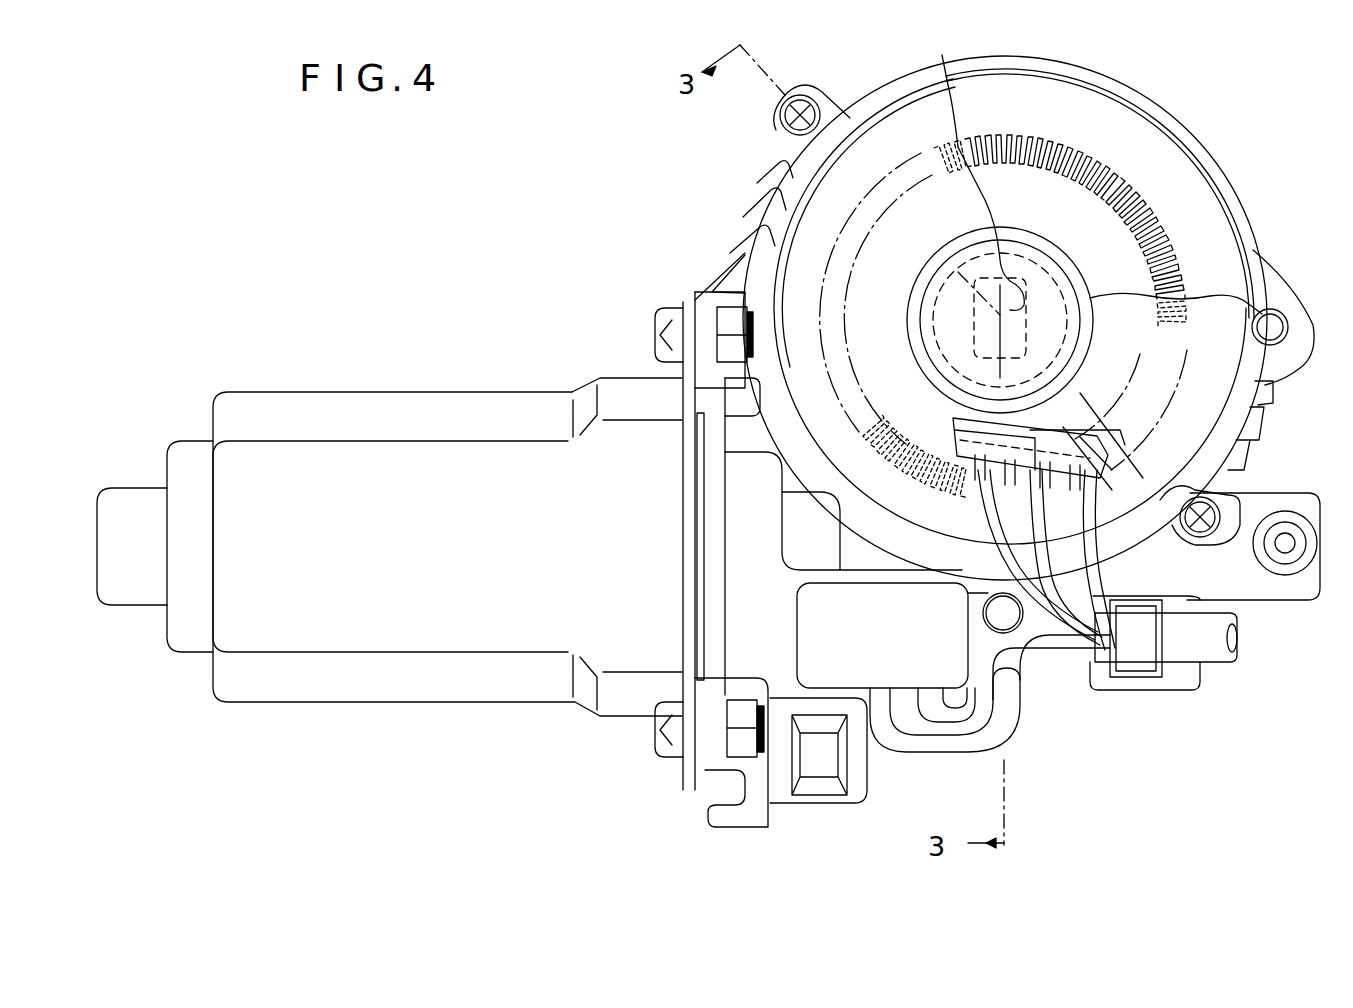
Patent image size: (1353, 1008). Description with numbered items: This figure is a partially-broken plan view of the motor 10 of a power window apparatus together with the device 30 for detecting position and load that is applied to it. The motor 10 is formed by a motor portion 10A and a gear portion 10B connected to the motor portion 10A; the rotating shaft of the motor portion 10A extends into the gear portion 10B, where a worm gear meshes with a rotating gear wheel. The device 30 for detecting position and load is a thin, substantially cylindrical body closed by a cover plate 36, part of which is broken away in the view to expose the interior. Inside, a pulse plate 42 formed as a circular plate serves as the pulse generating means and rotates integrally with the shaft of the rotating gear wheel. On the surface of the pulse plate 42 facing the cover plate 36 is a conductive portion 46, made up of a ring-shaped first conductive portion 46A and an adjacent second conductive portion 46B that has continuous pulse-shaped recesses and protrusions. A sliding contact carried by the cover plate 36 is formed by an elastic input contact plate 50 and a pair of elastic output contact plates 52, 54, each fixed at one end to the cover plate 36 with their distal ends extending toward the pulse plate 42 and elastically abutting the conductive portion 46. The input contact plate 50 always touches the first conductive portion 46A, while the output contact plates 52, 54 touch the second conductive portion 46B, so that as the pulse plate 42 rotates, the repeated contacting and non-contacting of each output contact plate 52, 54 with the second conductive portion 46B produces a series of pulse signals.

The motor 10 is at (834, 866).
The motor portion 10A is at (548, 736).
The gear portion 10B is at (903, 757).
The device for detecting position and load 30 is at (1247, 164).
The cover plate 36 is at (880, 148).
The pulse plate 42 is at (1200, 238).
The conductive portion 46 is at (1158, 45).
The first conductive portion 46A is at (1053, 193).
The second conductive portion 46B is at (1127, 183).
The input contact plate 50 is at (936, 440).
The output contact plate 52 is at (907, 465).
The output contact plate 54 is at (1085, 482).